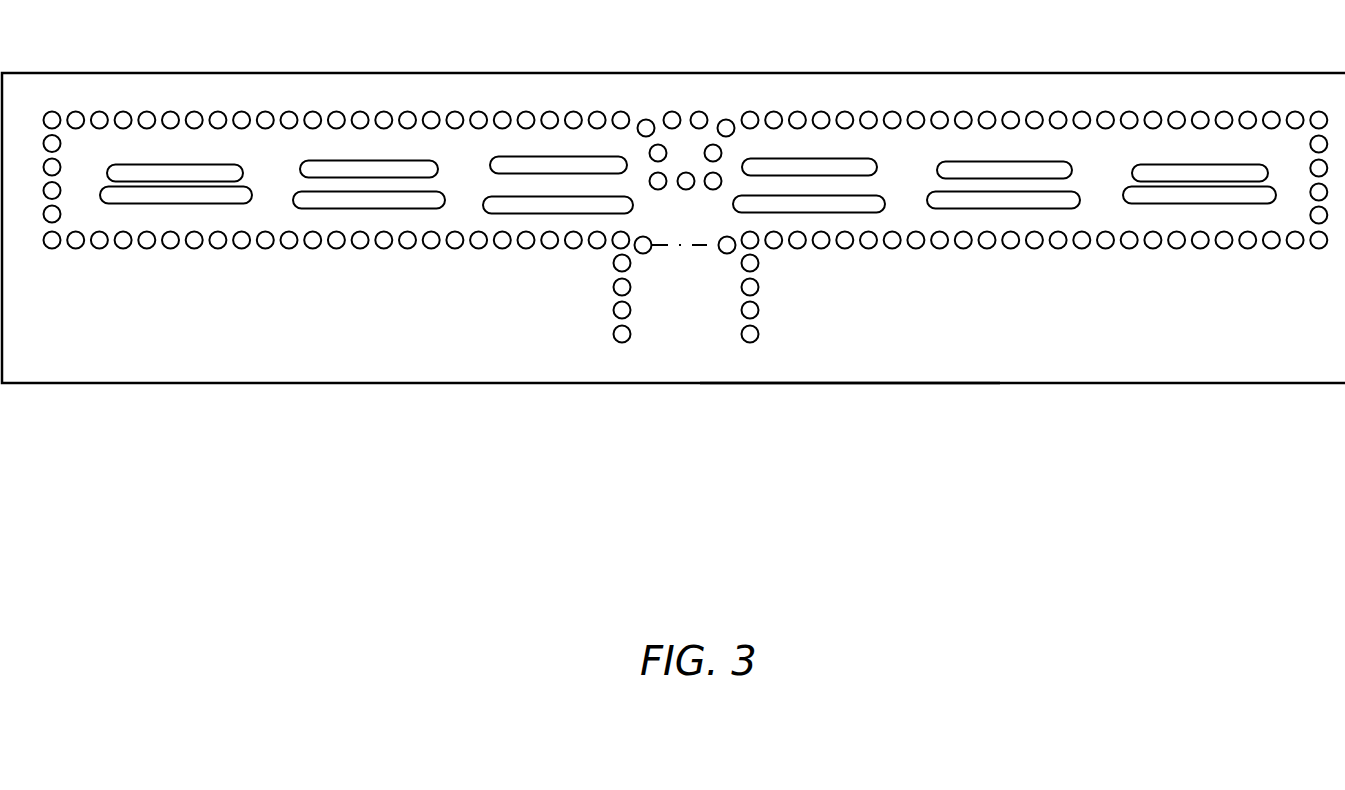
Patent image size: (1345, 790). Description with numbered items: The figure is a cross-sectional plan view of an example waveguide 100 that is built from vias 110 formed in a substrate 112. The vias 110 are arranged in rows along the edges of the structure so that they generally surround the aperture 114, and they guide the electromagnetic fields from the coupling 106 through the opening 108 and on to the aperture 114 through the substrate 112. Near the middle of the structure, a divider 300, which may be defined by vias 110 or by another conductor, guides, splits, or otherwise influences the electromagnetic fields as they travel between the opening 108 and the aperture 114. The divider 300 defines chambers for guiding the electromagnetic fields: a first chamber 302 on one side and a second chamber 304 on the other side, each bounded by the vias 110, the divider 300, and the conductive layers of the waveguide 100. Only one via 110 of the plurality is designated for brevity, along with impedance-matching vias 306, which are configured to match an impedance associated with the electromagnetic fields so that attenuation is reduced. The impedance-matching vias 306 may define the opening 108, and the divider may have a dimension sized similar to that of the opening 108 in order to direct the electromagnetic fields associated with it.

The waveguide 100 is at (199, 95).
The coupling 106 is at (600, 361).
The opening 108 is at (700, 247).
The vias 110 is at (757, 291).
The substrate 112 is at (848, 376).
The aperture 114 is at (878, 177).
The divider 300 is at (699, 203).
The first chamber 302 is at (483, 265).
The second chamber 304 is at (1121, 267).
The impedance-matching vias 306 is at (726, 254).